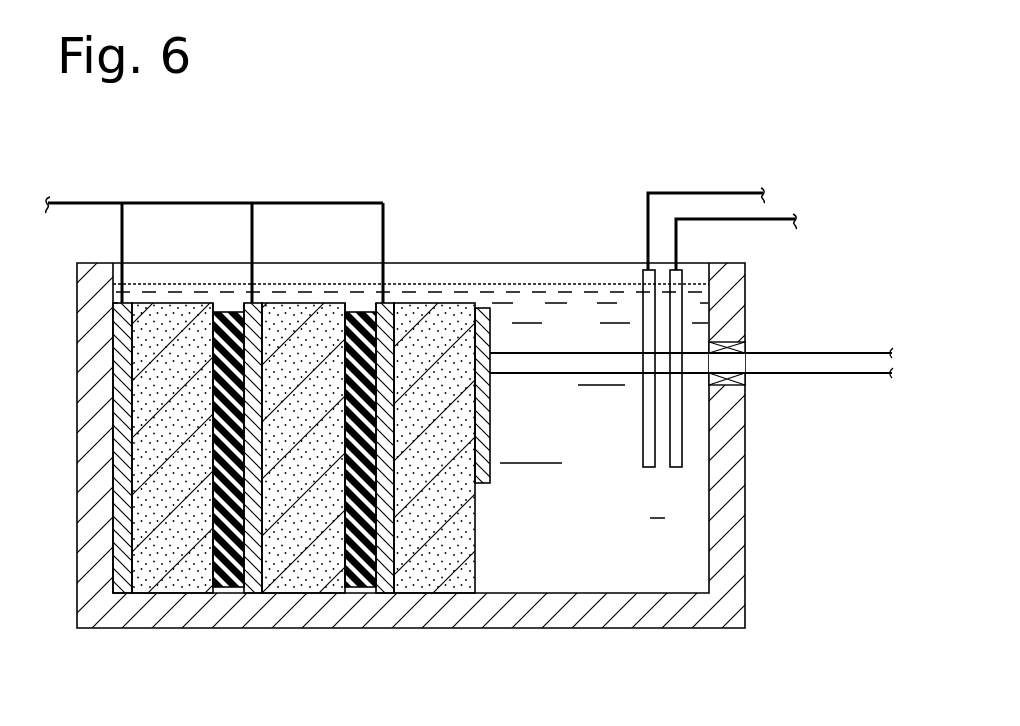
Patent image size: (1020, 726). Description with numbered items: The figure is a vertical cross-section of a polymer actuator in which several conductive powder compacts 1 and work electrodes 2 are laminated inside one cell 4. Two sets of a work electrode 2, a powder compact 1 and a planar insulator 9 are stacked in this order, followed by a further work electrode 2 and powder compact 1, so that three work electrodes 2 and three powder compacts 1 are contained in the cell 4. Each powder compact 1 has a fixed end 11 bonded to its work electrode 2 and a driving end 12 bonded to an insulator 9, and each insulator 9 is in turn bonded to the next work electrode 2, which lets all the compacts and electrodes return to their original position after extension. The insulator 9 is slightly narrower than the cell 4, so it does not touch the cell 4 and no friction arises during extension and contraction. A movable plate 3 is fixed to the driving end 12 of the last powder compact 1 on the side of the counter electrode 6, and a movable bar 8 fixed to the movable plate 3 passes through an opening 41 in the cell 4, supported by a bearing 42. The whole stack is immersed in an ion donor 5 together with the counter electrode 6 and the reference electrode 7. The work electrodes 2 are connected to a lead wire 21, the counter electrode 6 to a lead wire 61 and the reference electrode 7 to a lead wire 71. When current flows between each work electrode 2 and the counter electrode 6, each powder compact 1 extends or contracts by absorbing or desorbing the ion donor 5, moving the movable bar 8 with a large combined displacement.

The conductive powder compact 1 is at (172, 572).
The work electrode 2 is at (123, 583).
The movable plate 3 is at (478, 323).
The cell 4 is at (737, 487).
The ion donor 5 is at (572, 293).
The counter electrode 6 is at (635, 270).
The reference electrode 7 is at (662, 270).
The movable bar 8 is at (855, 353).
The planar insulator 9 is at (227, 575).
The fixed end 11 is at (132, 323).
The driving end 12 is at (213, 336).
The lead wire 21 is at (72, 200).
The opening 41 is at (730, 368).
The bearing 42 is at (738, 373).
The lead wire 61 is at (738, 192).
The lead wire 71 is at (773, 213).